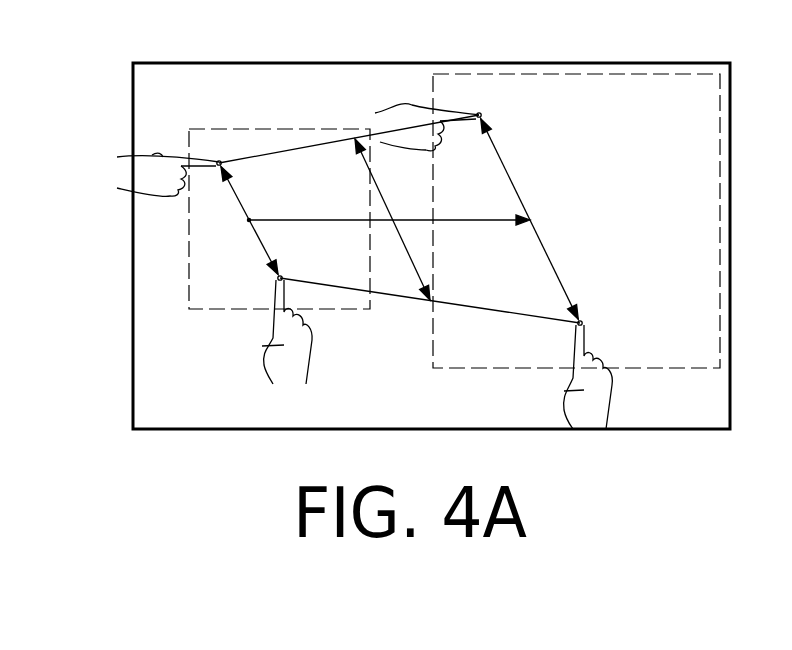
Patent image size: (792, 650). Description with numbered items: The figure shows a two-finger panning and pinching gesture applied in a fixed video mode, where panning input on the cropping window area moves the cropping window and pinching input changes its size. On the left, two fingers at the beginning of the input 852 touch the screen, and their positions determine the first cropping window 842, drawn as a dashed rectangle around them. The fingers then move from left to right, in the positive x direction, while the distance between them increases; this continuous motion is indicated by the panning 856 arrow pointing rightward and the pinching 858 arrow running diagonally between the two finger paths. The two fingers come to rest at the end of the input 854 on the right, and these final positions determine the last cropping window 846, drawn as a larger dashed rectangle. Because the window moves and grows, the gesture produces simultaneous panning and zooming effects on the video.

The first cropping window 842 is at (252, 129).
The last cropping window 846 is at (690, 369).
The beginning of the input 852 is at (153, 153).
The end of the input 854 is at (405, 103).
The panning input 856 is at (463, 220).
The pinching input 858 is at (407, 250).